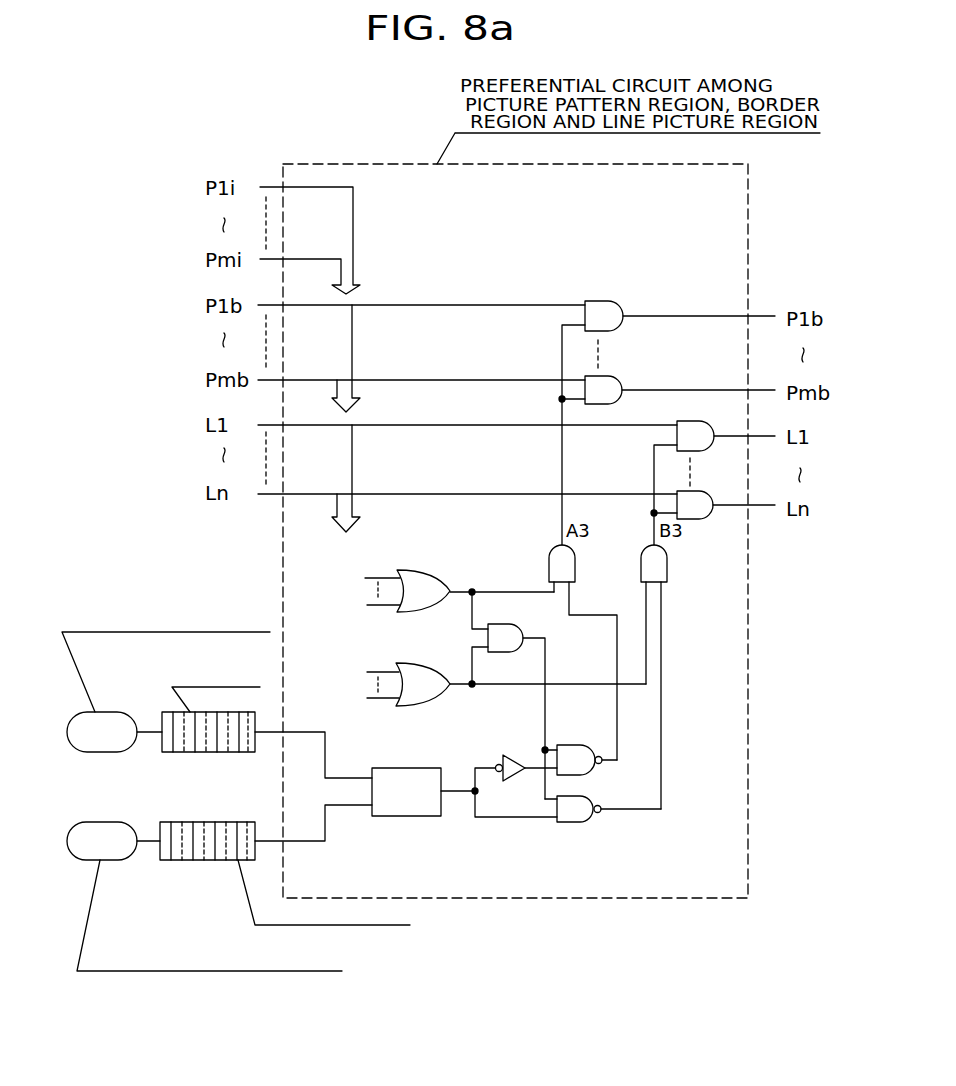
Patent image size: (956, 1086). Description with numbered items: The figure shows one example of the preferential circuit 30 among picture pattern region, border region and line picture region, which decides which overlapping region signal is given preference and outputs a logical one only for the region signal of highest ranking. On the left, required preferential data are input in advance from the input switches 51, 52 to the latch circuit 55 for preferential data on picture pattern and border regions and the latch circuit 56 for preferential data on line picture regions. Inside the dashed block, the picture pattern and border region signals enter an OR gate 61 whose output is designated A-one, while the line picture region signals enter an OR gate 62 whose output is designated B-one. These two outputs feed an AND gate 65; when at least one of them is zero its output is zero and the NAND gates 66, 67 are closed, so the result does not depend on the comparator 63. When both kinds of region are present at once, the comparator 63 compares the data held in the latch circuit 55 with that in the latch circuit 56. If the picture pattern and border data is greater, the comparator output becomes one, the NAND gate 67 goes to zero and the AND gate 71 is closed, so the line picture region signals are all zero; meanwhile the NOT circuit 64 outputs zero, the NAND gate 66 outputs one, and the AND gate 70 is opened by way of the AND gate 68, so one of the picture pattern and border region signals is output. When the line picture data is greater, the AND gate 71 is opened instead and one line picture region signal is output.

The preferential circuit among picture pattern region, border region and line pictur 30 is at (353, 163).
The input switch 51 is at (90, 752).
The input switch 52 is at (95, 822).
The latch circuit for preferential data on picture pattern regions and border region 55 is at (255, 745).
The latch circuit for preferential data on line picture regions 56 is at (255, 828).
The OR gate 61 is at (433, 572).
The OR gate 62 is at (437, 660).
The comparator 63 is at (425, 768).
The NOT circuit 64 is at (514, 761).
The AND gate 65 is at (516, 630).
The NAND gate 66 is at (578, 745).
The NAND gate 67 is at (583, 822).
The AND gate 68 is at (576, 560).
The AND gate 70 is at (607, 301).
The AND gate 71 is at (699, 424).